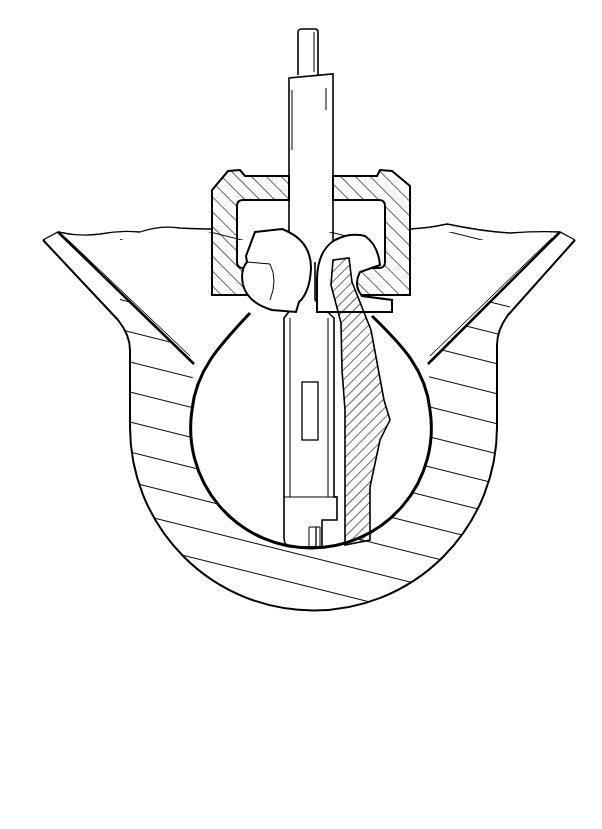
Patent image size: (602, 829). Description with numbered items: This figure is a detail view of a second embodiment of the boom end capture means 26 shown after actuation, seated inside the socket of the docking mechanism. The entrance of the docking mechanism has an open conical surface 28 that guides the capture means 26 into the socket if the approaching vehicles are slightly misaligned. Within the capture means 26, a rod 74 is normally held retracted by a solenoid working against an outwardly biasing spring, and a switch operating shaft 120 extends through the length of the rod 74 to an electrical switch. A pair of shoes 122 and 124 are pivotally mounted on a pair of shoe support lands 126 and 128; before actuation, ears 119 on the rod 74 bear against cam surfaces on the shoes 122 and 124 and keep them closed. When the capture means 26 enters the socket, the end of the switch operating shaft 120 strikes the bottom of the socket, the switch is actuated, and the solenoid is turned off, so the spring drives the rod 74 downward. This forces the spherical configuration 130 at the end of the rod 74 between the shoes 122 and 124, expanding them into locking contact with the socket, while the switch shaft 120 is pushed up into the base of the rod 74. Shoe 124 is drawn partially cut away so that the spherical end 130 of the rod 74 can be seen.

The capture means 26 is at (488, 516).
The open conical surface 28 is at (545, 245).
The rod 74 is at (333, 128).
The ears 119 is at (305, 423).
The switch operating shaft 120 is at (319, 42).
The shoe 122 is at (190, 420).
The shoe 124 is at (377, 388).
The shoe support land 126 is at (250, 304).
The shoe support land 128 is at (393, 306).
The spherical configuration 130 is at (356, 537).